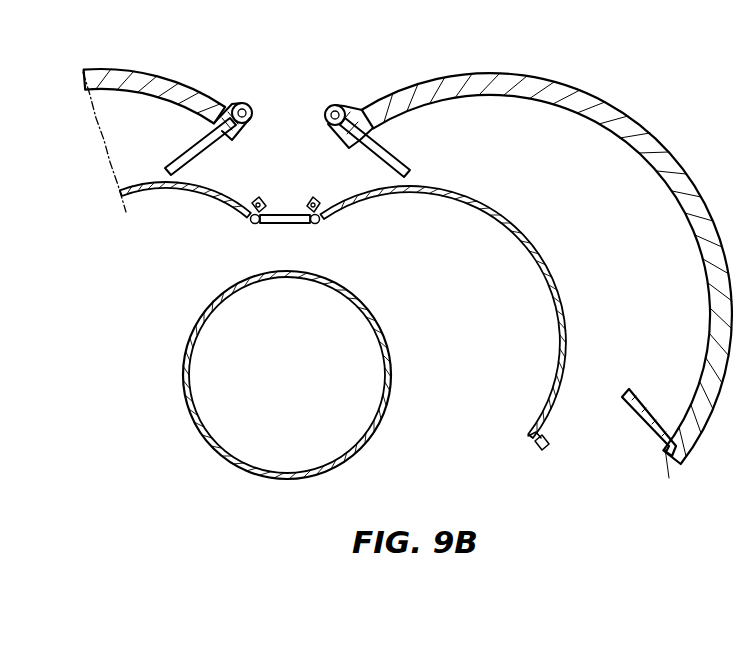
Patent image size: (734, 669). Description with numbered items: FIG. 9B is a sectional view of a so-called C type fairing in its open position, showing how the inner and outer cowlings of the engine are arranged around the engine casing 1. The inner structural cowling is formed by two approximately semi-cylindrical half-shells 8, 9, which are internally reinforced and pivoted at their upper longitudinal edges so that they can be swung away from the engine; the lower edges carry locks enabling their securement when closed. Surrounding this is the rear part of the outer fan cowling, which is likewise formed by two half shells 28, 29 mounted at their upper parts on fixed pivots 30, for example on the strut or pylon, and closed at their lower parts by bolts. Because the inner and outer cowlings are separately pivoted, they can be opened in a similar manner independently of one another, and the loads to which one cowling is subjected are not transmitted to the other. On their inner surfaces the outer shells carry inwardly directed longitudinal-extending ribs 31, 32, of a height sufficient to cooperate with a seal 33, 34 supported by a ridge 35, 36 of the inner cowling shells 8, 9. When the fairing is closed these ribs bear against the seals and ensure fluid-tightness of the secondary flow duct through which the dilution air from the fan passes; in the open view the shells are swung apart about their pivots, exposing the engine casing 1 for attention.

The engine casing 1 is at (393, 388).
The half-shell 8 is at (151, 190).
The half-shell 9 is at (523, 242).
The half shell 28 is at (135, 83).
The half shell 29 is at (672, 195).
The fixed pivot 30 is at (320, 104).
The longitudinal-extending rib 31 is at (183, 148).
The longitudinal-extending rib 32 is at (650, 405).
The seal 33 is at (320, 200).
The seal 34 is at (541, 433).
The ridge 35 is at (306, 198).
The ridge 36 is at (532, 443).